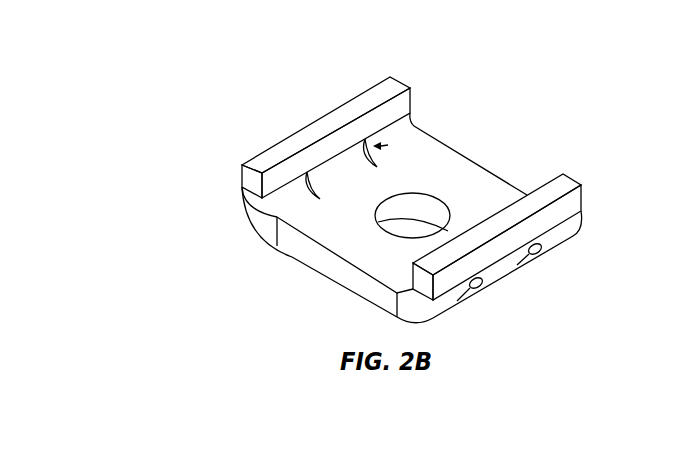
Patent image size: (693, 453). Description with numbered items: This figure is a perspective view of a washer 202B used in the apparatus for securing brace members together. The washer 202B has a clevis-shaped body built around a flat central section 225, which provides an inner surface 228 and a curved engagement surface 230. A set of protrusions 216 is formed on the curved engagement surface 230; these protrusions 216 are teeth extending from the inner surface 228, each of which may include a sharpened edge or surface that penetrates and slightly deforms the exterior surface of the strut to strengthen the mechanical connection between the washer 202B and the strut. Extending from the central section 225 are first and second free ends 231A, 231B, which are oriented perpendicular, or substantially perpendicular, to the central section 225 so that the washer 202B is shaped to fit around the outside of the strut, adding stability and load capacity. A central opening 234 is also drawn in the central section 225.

The washer 202B is at (211, 79).
The second free end 231B is at (360, 95).
The first free end 231A is at (572, 183).
The set of protrusions 216 is at (305, 186).
The inner surface 228 is at (497, 198).
The curved engagement surface 230 is at (278, 208).
The flat central section 225 is at (310, 263).
The central aperture 234 is at (395, 234).